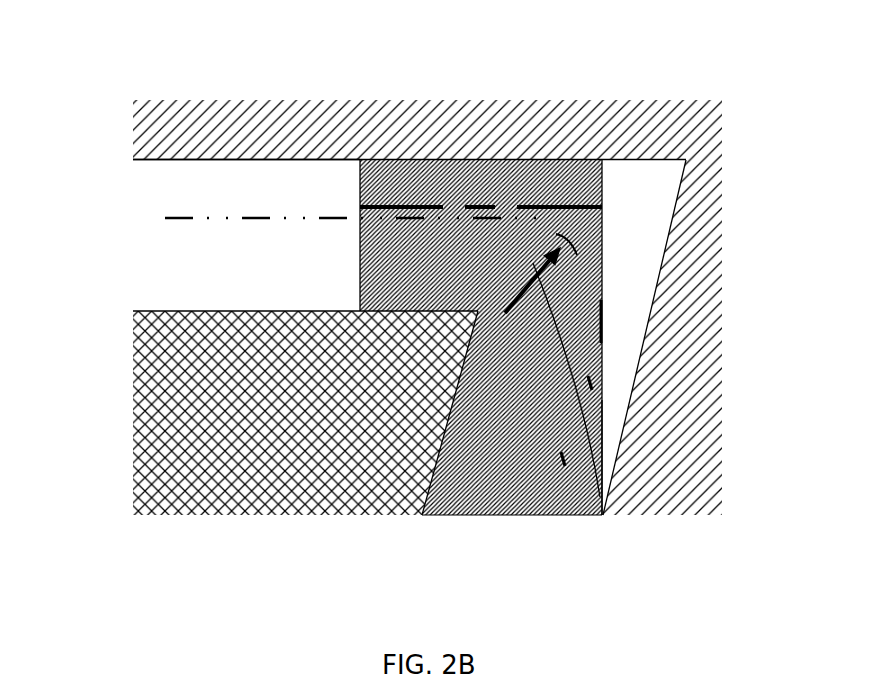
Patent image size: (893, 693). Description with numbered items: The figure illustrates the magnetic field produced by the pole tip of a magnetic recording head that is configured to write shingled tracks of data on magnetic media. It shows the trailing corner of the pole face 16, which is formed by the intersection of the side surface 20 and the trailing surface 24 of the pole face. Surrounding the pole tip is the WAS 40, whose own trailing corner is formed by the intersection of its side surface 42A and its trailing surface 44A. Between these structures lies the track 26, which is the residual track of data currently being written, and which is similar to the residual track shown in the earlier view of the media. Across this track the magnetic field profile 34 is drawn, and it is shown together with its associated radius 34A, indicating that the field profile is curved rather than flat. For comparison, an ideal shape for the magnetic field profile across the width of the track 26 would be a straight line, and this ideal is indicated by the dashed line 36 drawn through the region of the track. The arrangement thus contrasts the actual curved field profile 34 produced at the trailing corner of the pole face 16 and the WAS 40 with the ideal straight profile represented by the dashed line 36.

The pole face 16 is at (300, 443).
The side surface 20 is at (457, 515).
The trailing surface 24 is at (283, 311).
The track 26 is at (542, 513).
The magnetic field profile 34 is at (600, 497).
The radius 34A is at (600, 400).
The dashed line 36 is at (507, 180).
The WAS 40 is at (246, 122).
The side surface 42A is at (675, 200).
The trailing surface 44A is at (235, 107).